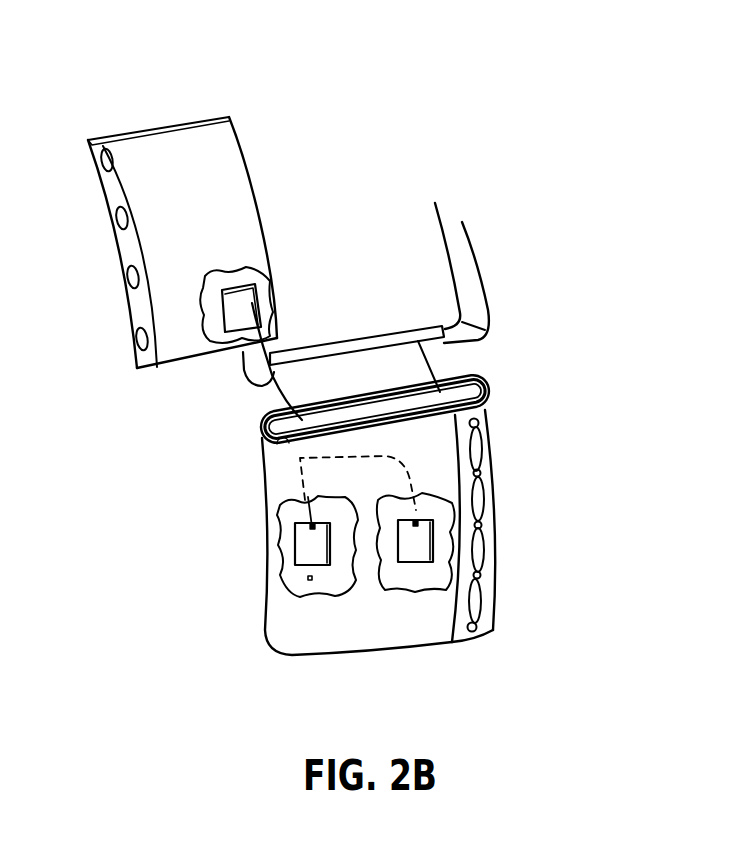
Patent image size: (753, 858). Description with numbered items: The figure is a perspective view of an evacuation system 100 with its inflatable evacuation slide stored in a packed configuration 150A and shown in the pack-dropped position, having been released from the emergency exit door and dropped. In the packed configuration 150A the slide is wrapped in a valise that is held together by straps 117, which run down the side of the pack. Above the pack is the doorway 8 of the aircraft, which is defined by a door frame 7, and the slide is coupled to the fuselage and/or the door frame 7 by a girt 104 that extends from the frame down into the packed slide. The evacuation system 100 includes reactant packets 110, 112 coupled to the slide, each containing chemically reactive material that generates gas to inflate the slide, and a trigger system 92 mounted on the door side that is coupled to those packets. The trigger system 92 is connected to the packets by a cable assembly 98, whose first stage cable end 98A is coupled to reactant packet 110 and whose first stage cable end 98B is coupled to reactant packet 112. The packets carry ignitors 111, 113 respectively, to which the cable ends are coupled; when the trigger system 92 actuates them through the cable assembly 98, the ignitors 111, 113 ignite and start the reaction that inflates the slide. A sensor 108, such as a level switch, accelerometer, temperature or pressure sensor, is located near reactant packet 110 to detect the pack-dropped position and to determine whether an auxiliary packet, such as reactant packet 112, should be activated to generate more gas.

The evacuation system 100 is at (158, 452).
The trigger system 92 is at (233, 303).
The cable assembly 98 is at (278, 388).
The door frame 7 is at (473, 264).
The doorway 8 is at (432, 283).
The girt 104 is at (420, 364).
The packed configuration 150A is at (543, 490).
The straps 117 is at (478, 447).
The first stage cable end 98B is at (398, 466).
The first stage cable end 98A is at (308, 497).
The reactant packet 110 is at (316, 548).
The ignitor 111 is at (311, 525).
The sensor 108 is at (304, 578).
The reactant packet 112 is at (418, 541).
The ignitor 113 is at (418, 523).